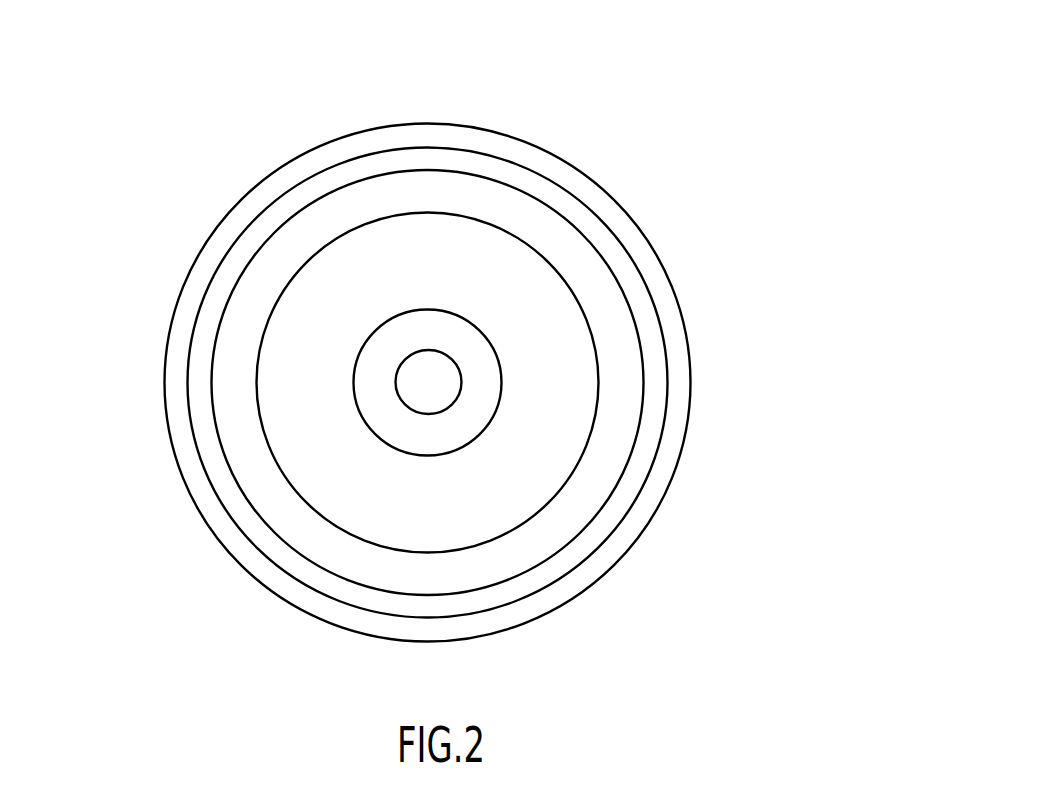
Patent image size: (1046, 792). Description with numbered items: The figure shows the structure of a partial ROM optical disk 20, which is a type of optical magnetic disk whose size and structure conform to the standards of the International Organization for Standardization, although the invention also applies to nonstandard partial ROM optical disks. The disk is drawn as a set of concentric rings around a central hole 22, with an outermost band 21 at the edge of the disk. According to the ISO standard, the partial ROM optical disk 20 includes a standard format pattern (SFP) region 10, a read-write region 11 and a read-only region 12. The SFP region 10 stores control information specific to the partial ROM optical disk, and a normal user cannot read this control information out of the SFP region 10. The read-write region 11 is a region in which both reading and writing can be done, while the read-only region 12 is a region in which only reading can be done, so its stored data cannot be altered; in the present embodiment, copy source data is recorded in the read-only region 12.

The partial ROM optical disk 20 is at (471, 344).
The outer ring 21 is at (455, 138).
The standard format pattern (SFP) region 10 is at (495, 172).
The read-only region 12 is at (538, 220).
The read-write region 11 is at (563, 303).
The center hole 22 is at (462, 382).